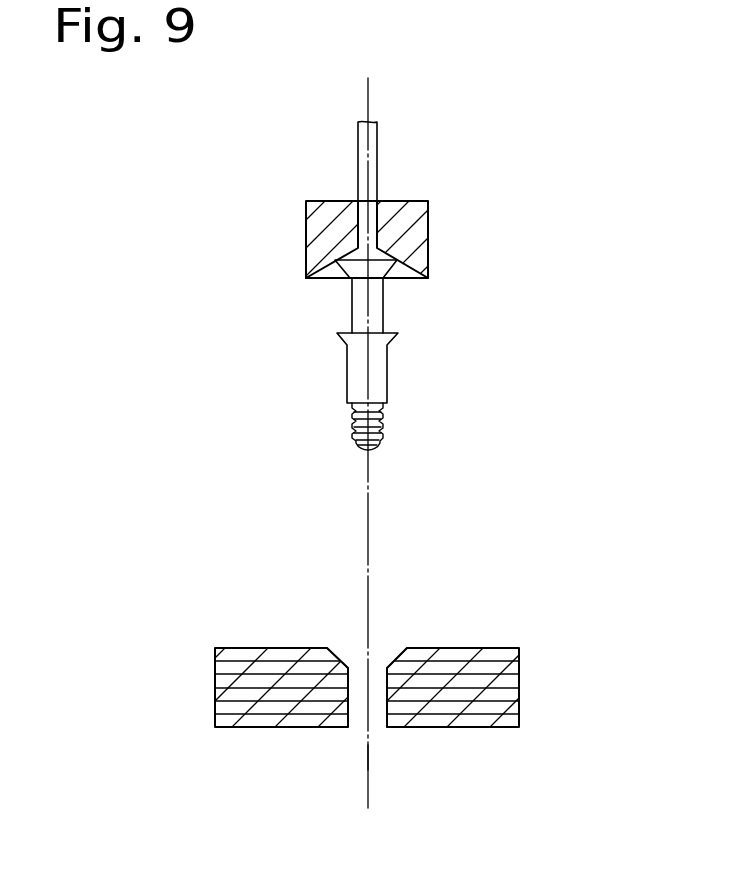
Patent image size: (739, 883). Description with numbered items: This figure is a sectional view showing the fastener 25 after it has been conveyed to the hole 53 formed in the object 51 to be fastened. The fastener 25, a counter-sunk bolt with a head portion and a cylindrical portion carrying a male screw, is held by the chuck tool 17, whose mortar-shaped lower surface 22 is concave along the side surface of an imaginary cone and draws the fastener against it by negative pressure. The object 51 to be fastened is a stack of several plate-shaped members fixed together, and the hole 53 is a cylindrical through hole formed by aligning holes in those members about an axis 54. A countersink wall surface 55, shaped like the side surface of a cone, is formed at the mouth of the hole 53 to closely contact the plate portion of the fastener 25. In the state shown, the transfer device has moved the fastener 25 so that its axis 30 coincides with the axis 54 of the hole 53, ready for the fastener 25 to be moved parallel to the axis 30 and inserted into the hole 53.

The chuck tool 17 is at (428, 229).
The lower surface 22 is at (404, 266).
The fastener 25 is at (382, 365).
The axis 30 is at (368, 558).
The object to be fastened 51 is at (396, 662).
The hole 53 is at (382, 660).
The axis 54 is at (368, 750).
The countersink wall surface 55 is at (343, 648).